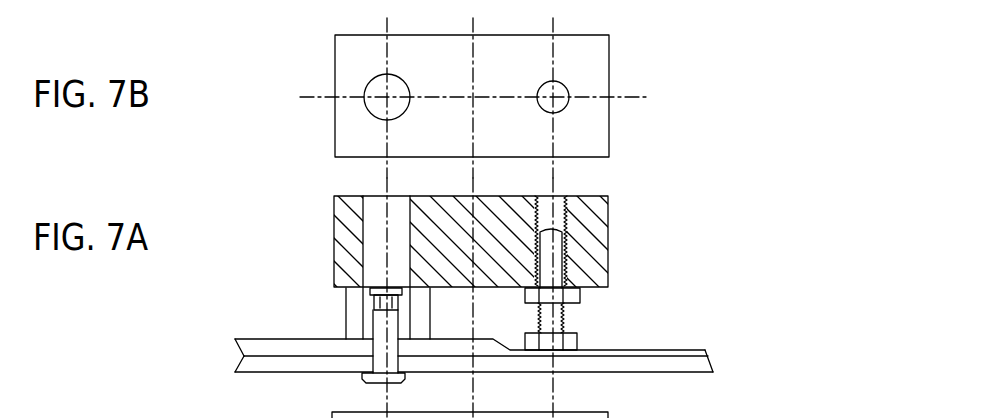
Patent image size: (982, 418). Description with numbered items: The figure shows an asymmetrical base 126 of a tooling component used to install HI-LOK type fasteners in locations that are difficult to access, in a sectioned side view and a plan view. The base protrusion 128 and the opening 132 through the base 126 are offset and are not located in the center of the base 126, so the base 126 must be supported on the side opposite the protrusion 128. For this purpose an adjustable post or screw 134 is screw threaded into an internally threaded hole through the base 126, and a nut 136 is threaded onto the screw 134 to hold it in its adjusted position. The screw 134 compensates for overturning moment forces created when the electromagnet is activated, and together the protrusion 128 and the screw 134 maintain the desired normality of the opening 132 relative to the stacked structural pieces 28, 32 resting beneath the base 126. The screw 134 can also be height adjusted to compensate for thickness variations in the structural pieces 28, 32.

In FIG. 7B, the asymmetrical base 126 is at (609, 62).
In FIG. 7A, the asymmetrical base 126 is at (608, 210).
In FIG. 7B, the opening 132 is at (374, 80).
In FIG. 7A, the opening 132 is at (362, 217).
In FIG. 7A, the base protrusion 128 is at (346, 307).
In FIG. 7A, the nut 136 is at (580, 297).
In FIG. 7A, the adjustable post or screw 134 is at (570, 319).
In FIG. 7A, the structural piece 28 is at (698, 350).
In FIG. 7A, the structural piece 32 is at (692, 374).